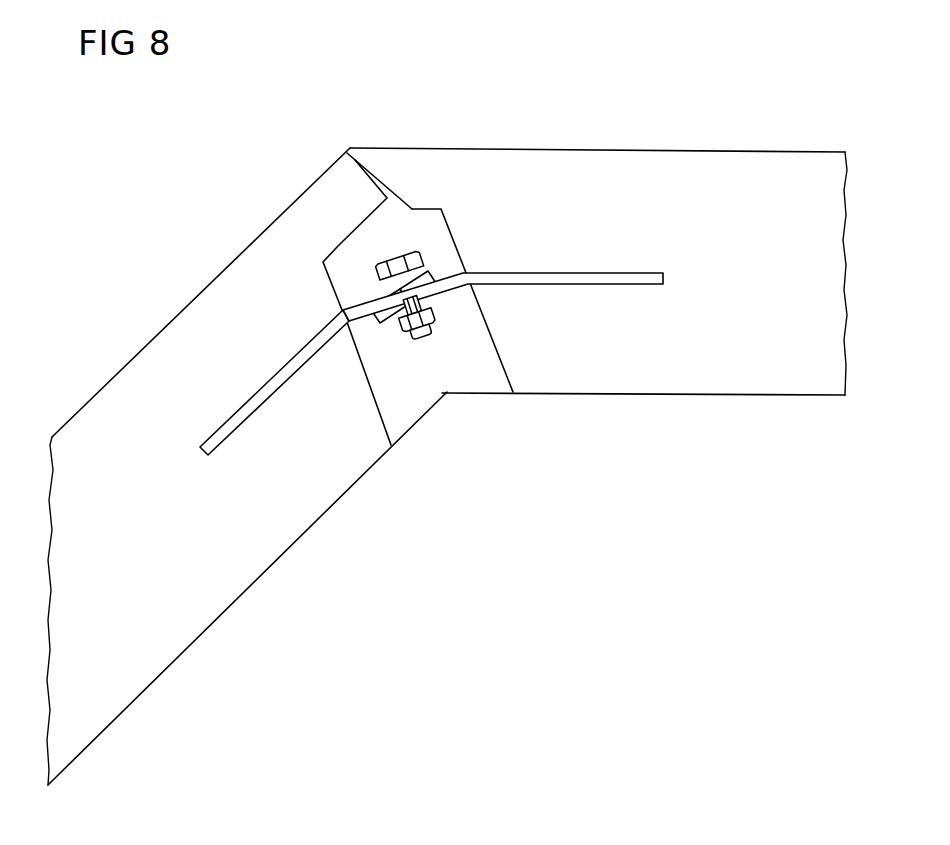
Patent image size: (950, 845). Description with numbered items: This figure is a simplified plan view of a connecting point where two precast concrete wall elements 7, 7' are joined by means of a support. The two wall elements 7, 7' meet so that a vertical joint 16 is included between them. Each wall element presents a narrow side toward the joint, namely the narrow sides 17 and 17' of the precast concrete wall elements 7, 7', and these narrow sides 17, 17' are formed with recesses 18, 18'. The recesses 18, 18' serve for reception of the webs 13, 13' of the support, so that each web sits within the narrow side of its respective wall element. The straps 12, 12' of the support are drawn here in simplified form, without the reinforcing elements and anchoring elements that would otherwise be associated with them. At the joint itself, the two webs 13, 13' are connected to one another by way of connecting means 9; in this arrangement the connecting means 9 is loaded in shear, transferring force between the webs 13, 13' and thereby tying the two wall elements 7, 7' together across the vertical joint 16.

The precast concrete wall element 7 is at (598, 239).
The precast concrete wall element 7' is at (247, 466).
The connecting means 9 is at (413, 262).
The strap 12 is at (503, 370).
The strap 12' is at (274, 488).
The web 13 is at (431, 369).
The web 13' is at (380, 427).
The vertical joint 16 is at (366, 165).
The narrow side 17 is at (494, 375).
The narrow side 17' is at (390, 421).
The recess 18 is at (441, 181).
The recess 18' is at (327, 222).